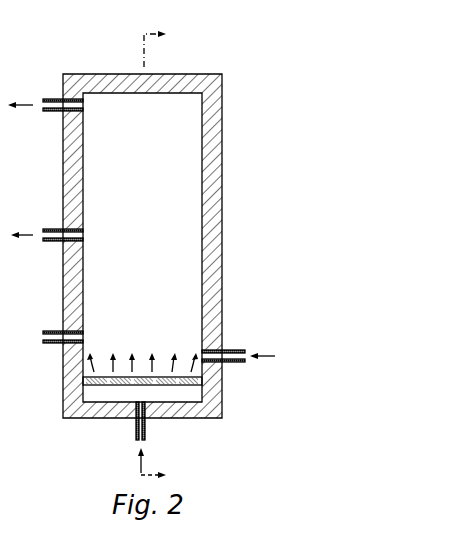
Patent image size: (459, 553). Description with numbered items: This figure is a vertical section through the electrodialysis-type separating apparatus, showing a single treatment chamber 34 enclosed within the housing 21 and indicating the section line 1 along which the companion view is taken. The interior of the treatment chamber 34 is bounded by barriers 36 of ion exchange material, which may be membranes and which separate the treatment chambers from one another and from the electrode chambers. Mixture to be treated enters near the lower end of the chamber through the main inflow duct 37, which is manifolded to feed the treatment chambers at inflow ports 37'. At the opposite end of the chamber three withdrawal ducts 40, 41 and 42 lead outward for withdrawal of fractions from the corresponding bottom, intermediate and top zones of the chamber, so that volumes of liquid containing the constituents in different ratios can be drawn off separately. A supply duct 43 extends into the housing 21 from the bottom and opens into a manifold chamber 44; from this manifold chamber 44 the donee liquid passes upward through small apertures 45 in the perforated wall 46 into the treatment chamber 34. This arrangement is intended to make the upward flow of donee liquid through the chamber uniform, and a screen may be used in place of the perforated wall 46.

The section line 1- 1 is at (161, 256).
The housing 21 is at (220, 166).
The treatment chamber 34 is at (185, 297).
The barrier of ion exchange material 36 is at (153, 194).
The main inflow duct 37 is at (238, 339).
The inflow port 37' is at (182, 341).
The withdrawal duct 40 is at (84, 341).
The withdrawal duct 41 is at (86, 236).
The withdrawal duct 42 is at (85, 105).
The supply duct 43 is at (146, 431).
The manifold chamber 44 is at (126, 395).
The small apertures 45 is at (108, 388).
The perforated wall 46 is at (122, 377).